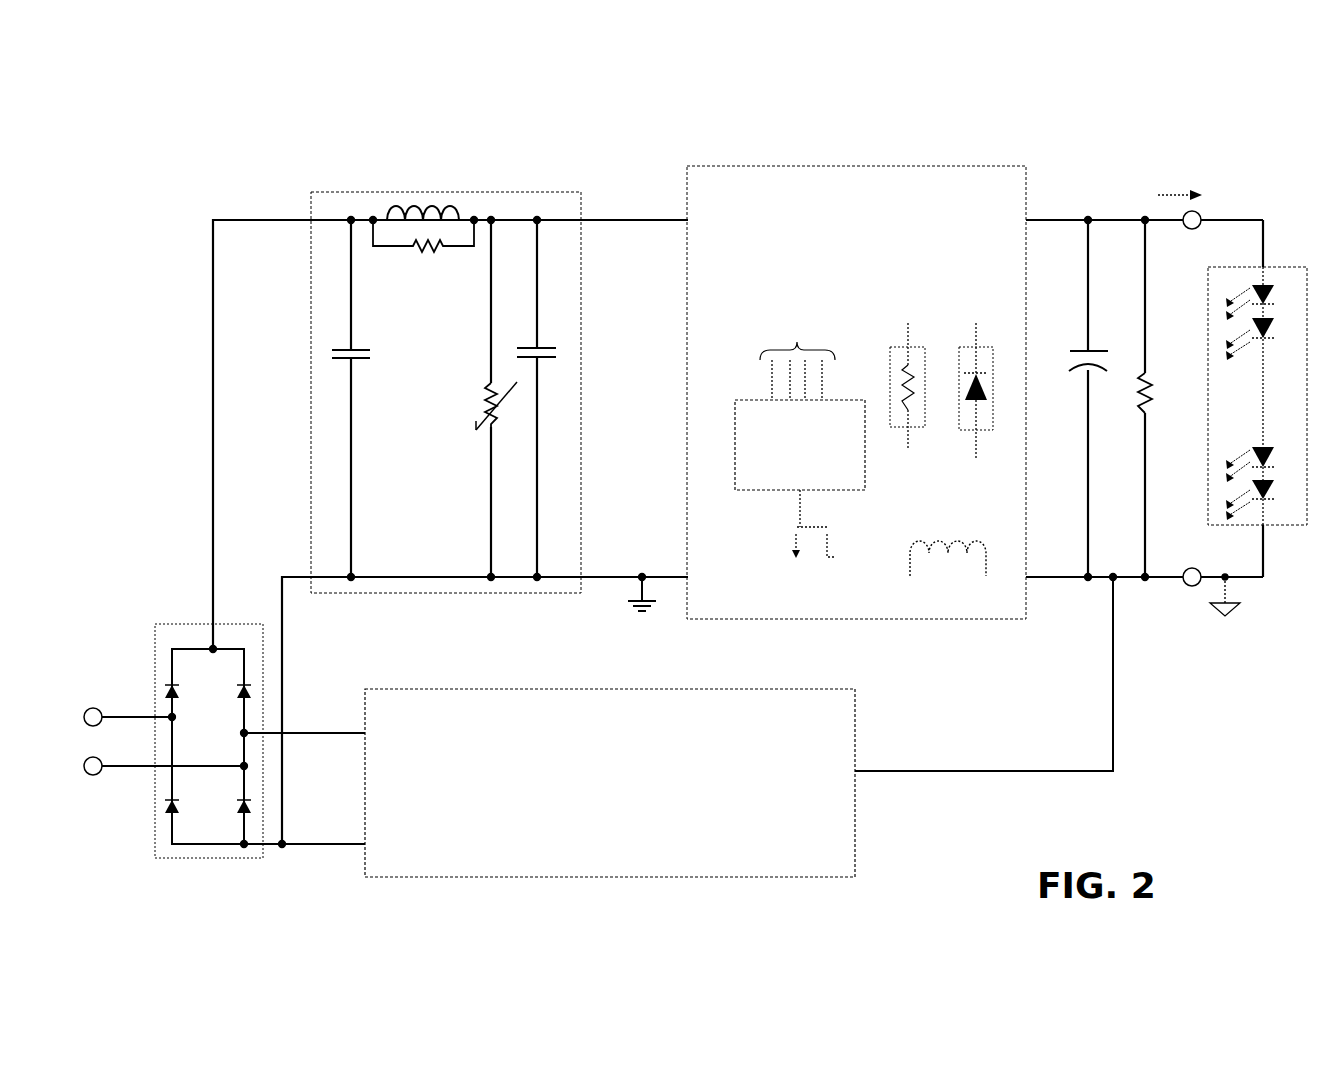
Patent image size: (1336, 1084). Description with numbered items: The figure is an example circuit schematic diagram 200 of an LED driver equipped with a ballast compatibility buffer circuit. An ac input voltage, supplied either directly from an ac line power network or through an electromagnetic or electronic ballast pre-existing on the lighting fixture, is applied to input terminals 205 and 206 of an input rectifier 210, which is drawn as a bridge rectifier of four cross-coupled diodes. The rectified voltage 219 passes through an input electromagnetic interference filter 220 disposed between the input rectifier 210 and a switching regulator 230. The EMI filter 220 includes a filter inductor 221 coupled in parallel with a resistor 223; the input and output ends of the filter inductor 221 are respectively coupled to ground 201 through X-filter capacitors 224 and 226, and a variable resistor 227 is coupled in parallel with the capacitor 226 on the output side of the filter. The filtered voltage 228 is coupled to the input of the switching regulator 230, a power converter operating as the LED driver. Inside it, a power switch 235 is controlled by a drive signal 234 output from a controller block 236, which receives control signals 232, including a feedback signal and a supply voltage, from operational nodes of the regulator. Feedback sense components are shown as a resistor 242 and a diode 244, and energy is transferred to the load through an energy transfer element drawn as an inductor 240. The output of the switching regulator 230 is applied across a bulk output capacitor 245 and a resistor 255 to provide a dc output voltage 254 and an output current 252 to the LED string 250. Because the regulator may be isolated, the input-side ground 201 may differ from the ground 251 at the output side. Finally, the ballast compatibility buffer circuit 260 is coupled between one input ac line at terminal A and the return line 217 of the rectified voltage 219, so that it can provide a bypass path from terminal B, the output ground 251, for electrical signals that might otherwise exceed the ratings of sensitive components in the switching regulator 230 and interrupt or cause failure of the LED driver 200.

The circuit schematic diagram 200 is at (692, 96).
The ground 201 is at (640, 614).
The input terminal 205 is at (113, 712).
The input terminal 206 is at (112, 764).
The input rectifier 210 is at (185, 622).
The return line 217 is at (288, 840).
The rectified voltage 219 is at (228, 202).
The input electromagnetic interference filter 220 is at (500, 192).
The filter inductor 221 is at (440, 200).
The resistor 223 is at (413, 236).
The X-filter capacitor 224 is at (342, 345).
The X-filter capacitor 226 is at (547, 342).
The variable resistor RV 227 is at (470, 396).
The filtered voltage 228 is at (608, 216).
The switching regulator 230 is at (810, 166).
The control signals 232 is at (790, 338).
The drive signal 234 is at (798, 503).
The power switch 235 is at (808, 558).
The controller block 236 is at (733, 440).
The inductor 240 is at (958, 525).
The resistor 242 is at (915, 340).
The diode 244 is at (983, 340).
The bulk output capacitor 245 is at (1096, 350).
The LED string 250 is at (1283, 266).
The ground 251 is at (1222, 620).
The output current 252 is at (1178, 168).
The dc output voltage 254 is at (1240, 188).
The resistor 255 is at (1150, 395).
The ballast compatibility buffer circuit 260 is at (535, 688).